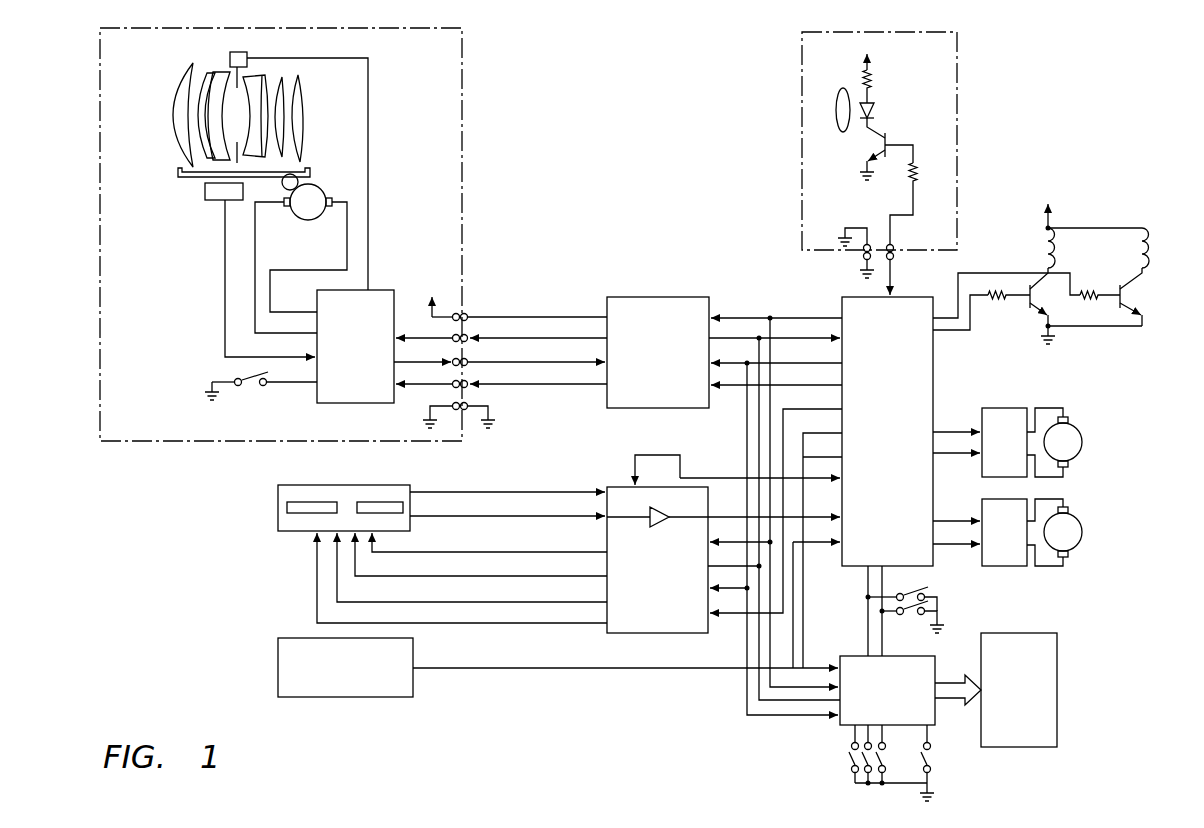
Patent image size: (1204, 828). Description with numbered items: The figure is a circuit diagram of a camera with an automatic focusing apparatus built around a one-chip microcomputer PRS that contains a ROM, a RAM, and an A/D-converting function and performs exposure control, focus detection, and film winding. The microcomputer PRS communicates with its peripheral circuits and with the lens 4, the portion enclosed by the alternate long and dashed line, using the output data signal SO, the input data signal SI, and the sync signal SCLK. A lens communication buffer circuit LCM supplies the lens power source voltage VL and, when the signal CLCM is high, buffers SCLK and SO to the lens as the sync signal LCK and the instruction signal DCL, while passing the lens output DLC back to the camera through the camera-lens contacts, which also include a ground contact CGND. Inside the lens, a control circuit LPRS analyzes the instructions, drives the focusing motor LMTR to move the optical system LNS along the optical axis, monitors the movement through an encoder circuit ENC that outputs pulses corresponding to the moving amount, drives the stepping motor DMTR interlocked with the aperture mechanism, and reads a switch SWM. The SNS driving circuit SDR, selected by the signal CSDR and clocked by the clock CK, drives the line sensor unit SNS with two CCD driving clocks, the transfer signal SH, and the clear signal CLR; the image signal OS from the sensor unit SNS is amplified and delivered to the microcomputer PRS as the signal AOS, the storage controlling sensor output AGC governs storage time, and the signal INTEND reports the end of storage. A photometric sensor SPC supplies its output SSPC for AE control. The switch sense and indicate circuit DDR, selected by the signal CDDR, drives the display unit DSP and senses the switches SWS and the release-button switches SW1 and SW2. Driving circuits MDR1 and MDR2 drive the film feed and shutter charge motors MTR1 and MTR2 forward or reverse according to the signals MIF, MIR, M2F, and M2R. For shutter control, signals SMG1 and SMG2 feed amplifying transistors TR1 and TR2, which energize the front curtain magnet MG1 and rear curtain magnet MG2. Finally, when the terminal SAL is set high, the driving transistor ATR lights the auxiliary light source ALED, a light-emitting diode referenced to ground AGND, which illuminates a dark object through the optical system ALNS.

The lens unit (DMI-4) 4 is at (365, 190).
The stepping motor DMTR is at (247, 52).
The photographing lens LNS is at (311, 103).
The encoder circuit ENC is at (213, 199).
The focusing motor LMTR is at (315, 193).
The control circuit in the lens LPRS is at (381, 290).
The switch in lens SWM is at (261, 381).
The lens power source voltage VL is at (519, 309).
The instruction data signal DCL is at (501, 330).
The lens output signal DLC is at (499, 353).
The buffer sync signal LCK is at (501, 376).
The common ground CGND is at (482, 410).
The lens communication buffer circuit LCM is at (680, 297).
The microcomputer PRS is at (921, 297).
The communication signal SO is at (776, 492).
The communication signal SI is at (774, 510).
The communication signal SCLK is at (776, 529).
The signal CLCM is at (776, 375).
The signal CSDR is at (776, 500).
The signal CDDR is at (814, 540).
The clock CK is at (822, 446).
The signal INTEND is at (737, 470).
The signal AOS is at (732, 498).
The SNS driving circuit SDR is at (677, 633).
The line sensor unit SNS is at (388, 485).
The signal AGC is at (507, 482).
The output signal OS is at (436, 498).
The signal SH is at (472, 568).
The clear signal CLR is at (462, 578).
The photometric sensor SPC is at (398, 697).
The output SSPC is at (625, 657).
The switch sense and indicate circuit DDR is at (918, 656).
The switch SW1 is at (918, 590).
The switch SW2 is at (908, 615).
The switches SWS is at (930, 758).
The display unit DSP is at (1028, 747).
The motor driving circuit MDR1 is at (1006, 408).
The signal M1F MIF is at (956, 422).
The signal M1R MIR is at (956, 444).
The motor MTR1 is at (1074, 443).
The motor driving circuit MDR2 is at (1013, 566).
The signal M2F is at (956, 511).
The signal M2R is at (956, 535).
The motor MTR2 is at (1082, 530).
The magnet 1 drive signal SMG1 is at (1026, 286).
The magnet 2 drive signal SMG2 is at (981, 321).
The amplifying transistor TR1 is at (1138, 298).
The amplifying transistor TR2 is at (1052, 298).
The shutter front curtain running start magnet MG1 is at (1147, 252).
The shutter rear curtain running start magnet MG2 is at (1057, 250).
The optical system ALNS is at (837, 97).
The auxiliary light source ALED is at (880, 110).
The driving transistor ATR is at (897, 138).
The output terminal SAL is at (906, 259).
The auxiliary light ground AGND is at (855, 244).